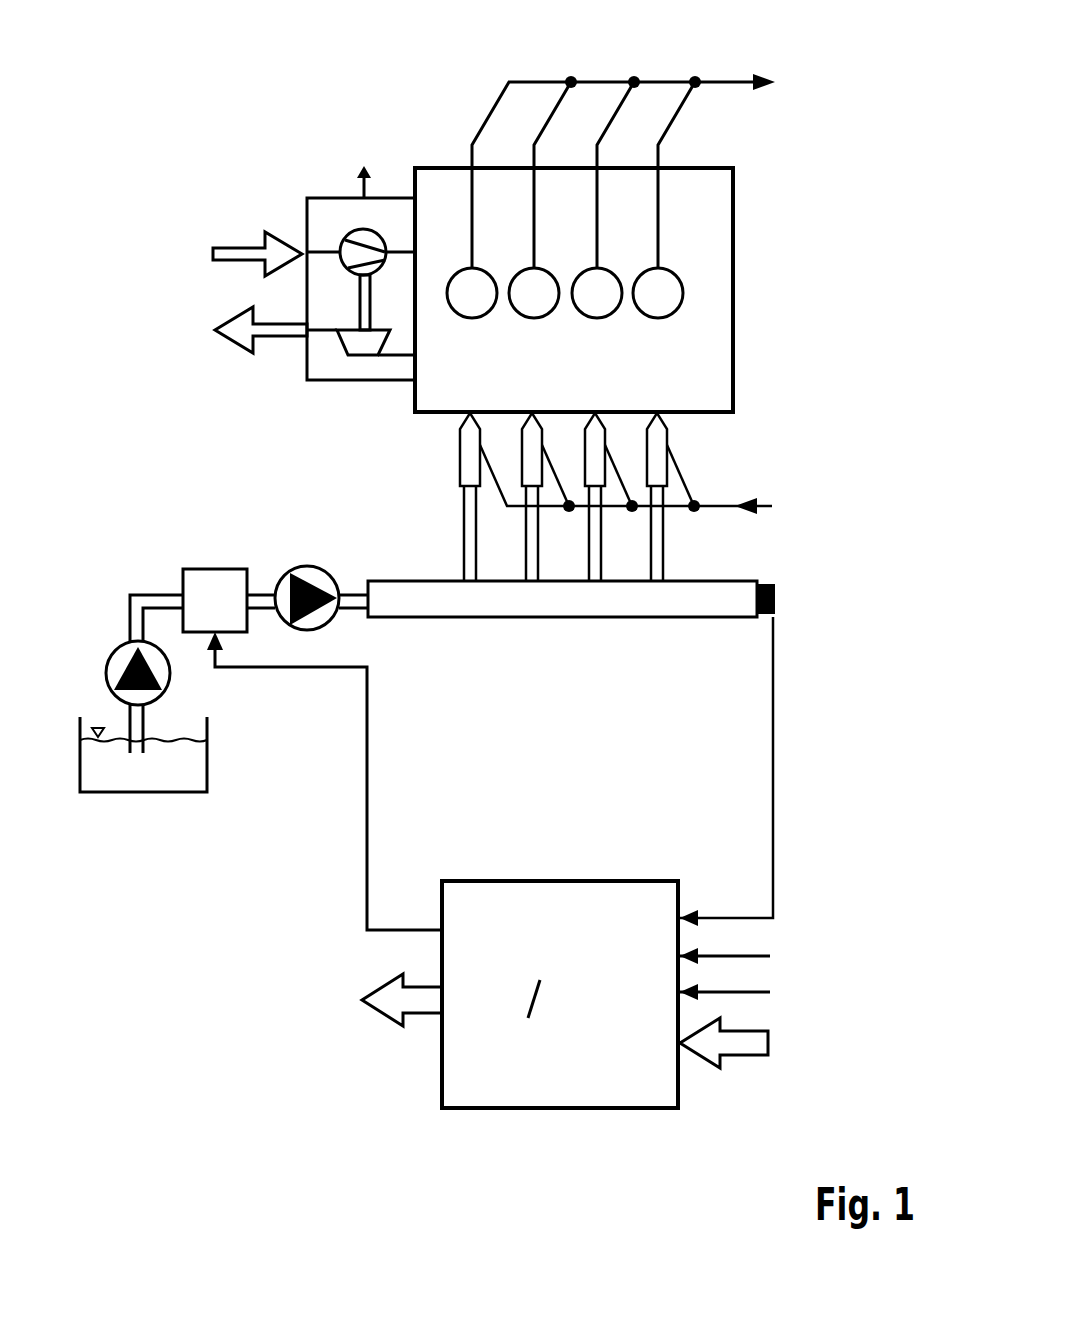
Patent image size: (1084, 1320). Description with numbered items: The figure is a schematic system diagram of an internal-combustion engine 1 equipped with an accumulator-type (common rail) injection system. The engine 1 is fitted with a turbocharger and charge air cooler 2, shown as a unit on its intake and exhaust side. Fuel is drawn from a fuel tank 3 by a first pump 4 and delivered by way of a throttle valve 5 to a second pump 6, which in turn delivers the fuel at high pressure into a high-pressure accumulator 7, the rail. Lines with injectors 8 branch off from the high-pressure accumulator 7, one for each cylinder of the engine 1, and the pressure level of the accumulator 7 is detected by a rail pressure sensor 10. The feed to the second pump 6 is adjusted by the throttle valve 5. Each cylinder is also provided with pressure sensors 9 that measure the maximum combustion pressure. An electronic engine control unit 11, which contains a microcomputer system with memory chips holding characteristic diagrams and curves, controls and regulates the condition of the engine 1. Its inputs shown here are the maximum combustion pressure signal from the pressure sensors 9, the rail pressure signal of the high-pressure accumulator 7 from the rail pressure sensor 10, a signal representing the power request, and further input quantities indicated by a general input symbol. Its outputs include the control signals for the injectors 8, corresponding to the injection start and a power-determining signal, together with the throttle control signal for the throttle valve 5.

The internal-combustion engine 1 is at (708, 388).
The turbocharger and charge air cooler 2 is at (347, 365).
The fuel tank 3 is at (194, 767).
The first pump 4 is at (115, 652).
The throttle valve 5 is at (222, 615).
The second pump 6 is at (310, 568).
The high-pressure accumulator 7 is at (523, 612).
The injectors 8 is at (468, 450).
The pressure sensors 9 is at (666, 307).
The rail pressure sensor 10 is at (777, 598).
The electronic engine control unit 11 is at (664, 1085).